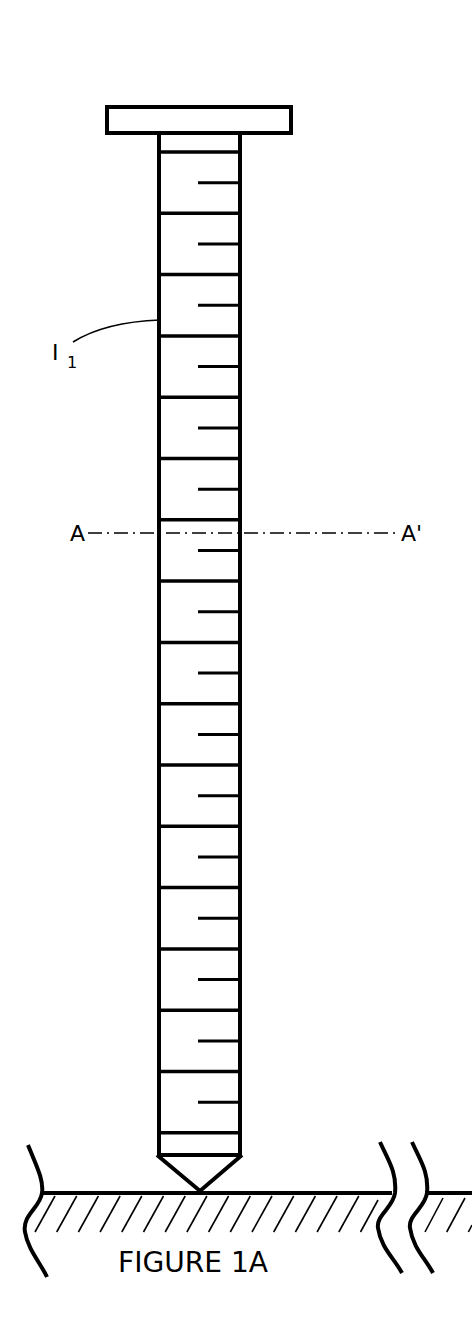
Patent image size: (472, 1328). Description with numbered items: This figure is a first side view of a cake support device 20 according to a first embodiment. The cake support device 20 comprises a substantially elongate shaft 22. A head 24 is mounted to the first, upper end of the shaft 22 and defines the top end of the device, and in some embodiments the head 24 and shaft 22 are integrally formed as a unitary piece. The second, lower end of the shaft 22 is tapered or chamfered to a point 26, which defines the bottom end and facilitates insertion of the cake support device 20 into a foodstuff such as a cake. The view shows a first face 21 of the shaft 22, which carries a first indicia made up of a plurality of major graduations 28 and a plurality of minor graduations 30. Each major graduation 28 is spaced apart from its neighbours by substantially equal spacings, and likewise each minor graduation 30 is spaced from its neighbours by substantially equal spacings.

The cake support device 20 is at (236, 597).
The first face 21 is at (198, 642).
The shaft 22 is at (241, 197).
The head 24 is at (283, 120).
The point 26 is at (192, 1178).
The major graduations 28 is at (218, 645).
The minor graduations 30 is at (227, 735).